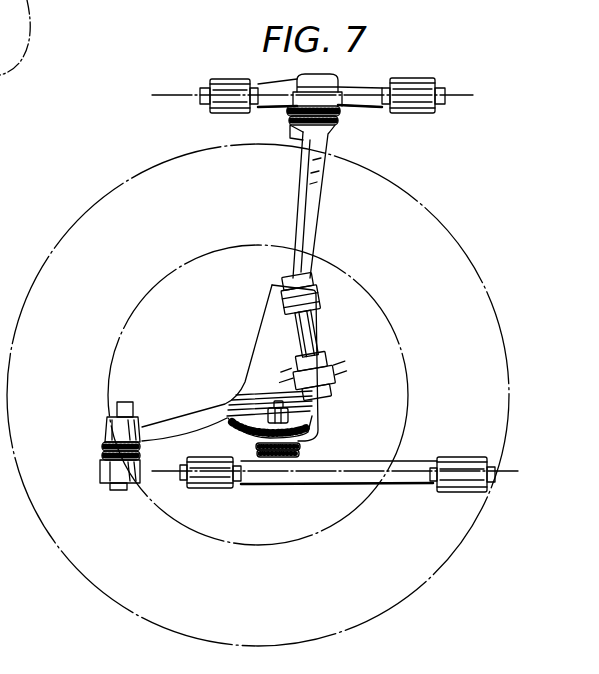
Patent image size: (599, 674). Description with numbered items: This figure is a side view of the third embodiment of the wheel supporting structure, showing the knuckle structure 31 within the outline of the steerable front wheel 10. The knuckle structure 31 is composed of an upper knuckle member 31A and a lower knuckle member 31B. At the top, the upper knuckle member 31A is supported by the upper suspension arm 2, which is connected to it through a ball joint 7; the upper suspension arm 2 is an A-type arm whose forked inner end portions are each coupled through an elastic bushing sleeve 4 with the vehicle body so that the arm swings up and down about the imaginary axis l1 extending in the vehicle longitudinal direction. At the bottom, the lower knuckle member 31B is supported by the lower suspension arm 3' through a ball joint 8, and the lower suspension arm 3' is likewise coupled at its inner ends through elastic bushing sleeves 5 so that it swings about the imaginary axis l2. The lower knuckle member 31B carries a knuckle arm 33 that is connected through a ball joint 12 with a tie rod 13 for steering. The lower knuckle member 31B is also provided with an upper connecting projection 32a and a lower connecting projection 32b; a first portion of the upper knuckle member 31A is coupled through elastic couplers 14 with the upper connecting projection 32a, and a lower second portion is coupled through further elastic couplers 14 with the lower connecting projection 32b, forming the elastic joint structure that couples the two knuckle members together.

The upper suspension arm 2 is at (364, 111).
The lower suspension arm 3' is at (339, 491).
The elastic bushing sleeve 4 is at (210, 108).
The elastic bushing sleeve 5 is at (188, 478).
The ball joint 7 is at (340, 126).
The ball joint 8 is at (300, 448).
The steerable front wheel 10 is at (463, 247).
The ball joint 12 is at (103, 443).
The tie rod 13 is at (110, 468).
The elastic couplers 14 is at (318, 279).
The knuckle structure 31 is at (200, 276).
The upper knuckle member 31A is at (292, 271).
The lower knuckle member 31B is at (262, 320).
The upper connecting projection 32a is at (312, 300).
The lower connecting projection 32b is at (300, 385).
The knuckle arm 33 is at (160, 427).
The imaginary axis l1 is at (462, 101).
The imaginary axis l2 is at (518, 470).